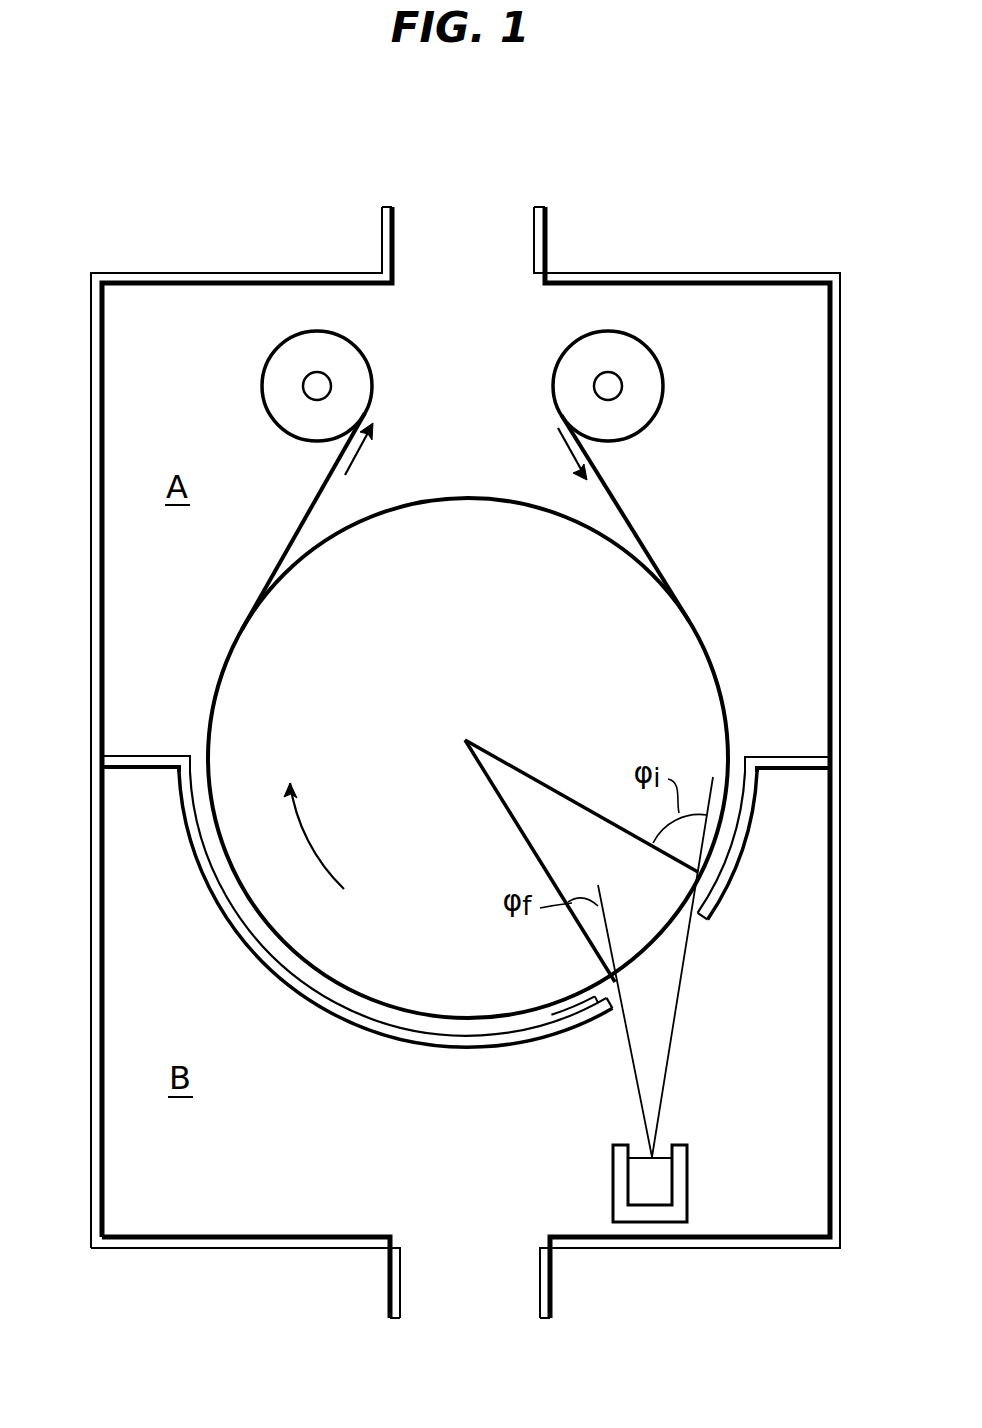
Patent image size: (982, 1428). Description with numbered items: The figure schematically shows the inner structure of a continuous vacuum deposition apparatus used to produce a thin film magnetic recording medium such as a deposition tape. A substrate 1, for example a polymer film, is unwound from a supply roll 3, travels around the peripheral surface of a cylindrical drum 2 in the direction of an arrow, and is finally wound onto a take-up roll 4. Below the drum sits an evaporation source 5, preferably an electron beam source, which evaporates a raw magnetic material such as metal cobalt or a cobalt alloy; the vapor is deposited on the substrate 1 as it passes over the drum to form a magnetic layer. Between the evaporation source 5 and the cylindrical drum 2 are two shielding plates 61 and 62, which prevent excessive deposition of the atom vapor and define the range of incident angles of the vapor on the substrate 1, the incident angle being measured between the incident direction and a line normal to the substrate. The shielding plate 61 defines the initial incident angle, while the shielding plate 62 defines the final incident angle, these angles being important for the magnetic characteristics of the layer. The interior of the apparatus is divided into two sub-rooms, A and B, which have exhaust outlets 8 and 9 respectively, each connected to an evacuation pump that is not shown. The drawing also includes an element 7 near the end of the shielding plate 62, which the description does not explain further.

The substrate 1 is at (632, 517).
The cylindrical drum 2 is at (458, 510).
The supply roll 3 is at (647, 344).
The take-up roll 4 is at (363, 347).
The evaporation source 5 is at (688, 1187).
The mask 7 is at (598, 1012).
The exhaust outlet 8 is at (481, 221).
The exhaust outlet 9 is at (478, 1270).
The shielding plate 61 is at (729, 877).
The shielding plate 62 is at (455, 1046).